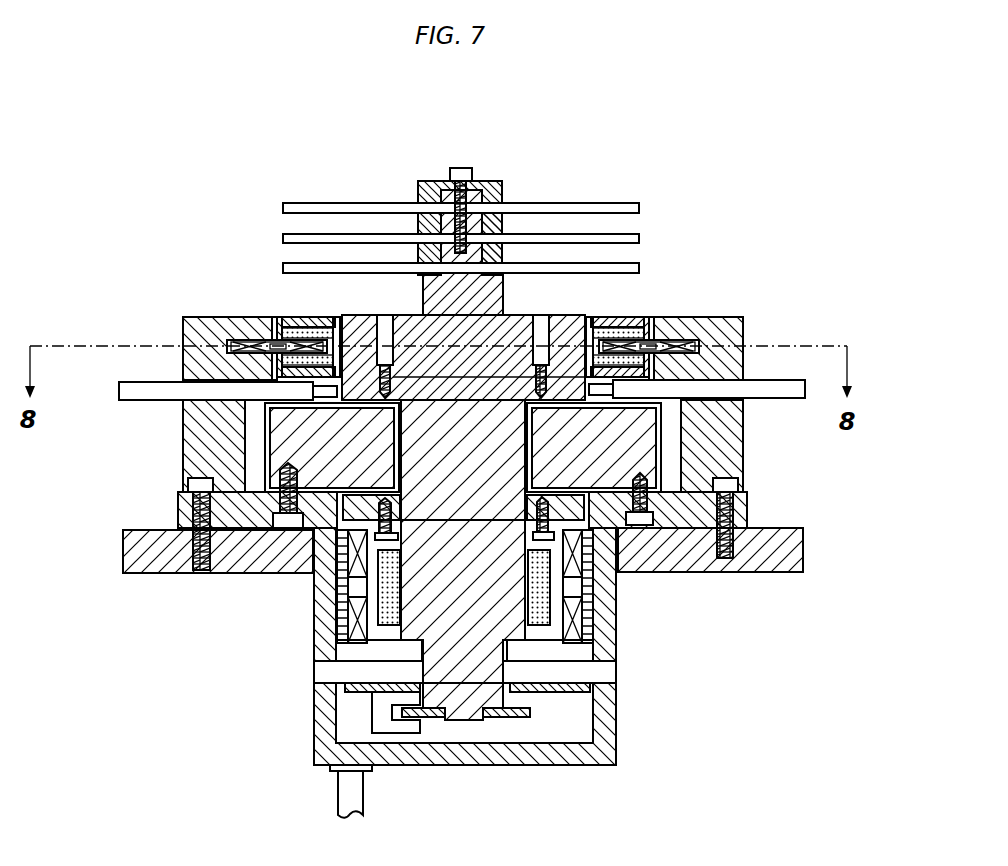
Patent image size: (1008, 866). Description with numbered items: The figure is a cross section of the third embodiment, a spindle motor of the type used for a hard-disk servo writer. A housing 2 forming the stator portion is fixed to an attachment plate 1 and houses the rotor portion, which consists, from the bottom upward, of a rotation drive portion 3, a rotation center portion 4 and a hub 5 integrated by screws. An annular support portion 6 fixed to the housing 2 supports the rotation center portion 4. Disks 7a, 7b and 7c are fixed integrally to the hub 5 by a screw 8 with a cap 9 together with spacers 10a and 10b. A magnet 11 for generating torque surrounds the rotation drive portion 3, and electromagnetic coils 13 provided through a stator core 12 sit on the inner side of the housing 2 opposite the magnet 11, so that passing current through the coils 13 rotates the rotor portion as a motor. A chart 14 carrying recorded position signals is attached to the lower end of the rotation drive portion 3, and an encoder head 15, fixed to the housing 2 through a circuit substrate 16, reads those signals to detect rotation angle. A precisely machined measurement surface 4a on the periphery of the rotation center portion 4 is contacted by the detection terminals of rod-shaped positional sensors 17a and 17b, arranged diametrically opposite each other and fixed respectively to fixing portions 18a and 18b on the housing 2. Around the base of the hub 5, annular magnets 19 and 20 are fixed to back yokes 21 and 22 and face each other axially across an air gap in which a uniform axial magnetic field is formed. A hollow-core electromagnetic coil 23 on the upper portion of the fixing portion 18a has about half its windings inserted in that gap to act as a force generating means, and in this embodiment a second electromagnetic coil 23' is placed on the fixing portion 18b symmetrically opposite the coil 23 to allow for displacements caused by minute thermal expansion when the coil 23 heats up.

The attachment plate 1 is at (160, 548).
The housing 2 is at (318, 745).
The rotation drive portion 3 is at (495, 625).
The rotation center portion 4 is at (497, 400).
The measurement surface 4a is at (630, 420).
The hub 5 is at (423, 295).
The annular support portion 6 is at (625, 427).
The disk 7a is at (305, 207).
The disk 7b is at (283, 238).
The disk 7c is at (283, 268).
The screw 8 is at (455, 203).
The cap 9 is at (435, 187).
The spacer 10a is at (505, 212).
The spacer 10b is at (503, 243).
The magnet 11 is at (385, 585).
The stator core 12 is at (587, 587).
The electromagnetic coils 13 is at (570, 610).
The chart 14 is at (512, 715).
The encoder head 15 is at (405, 730).
The circuit substrate 16 is at (352, 700).
The positional sensor 17a is at (790, 392).
The positional sensor 17b is at (137, 392).
The fixing portion 18a is at (718, 325).
The fixing portion 18b is at (197, 417).
The annular magnet 19 is at (232, 320).
The annular magnet 20 is at (285, 358).
The back yoke 21 is at (320, 318).
The back yoke 22 is at (288, 375).
The electromagnetic coil 23 is at (649, 304).
The electromagnetic coil 23' is at (214, 330).